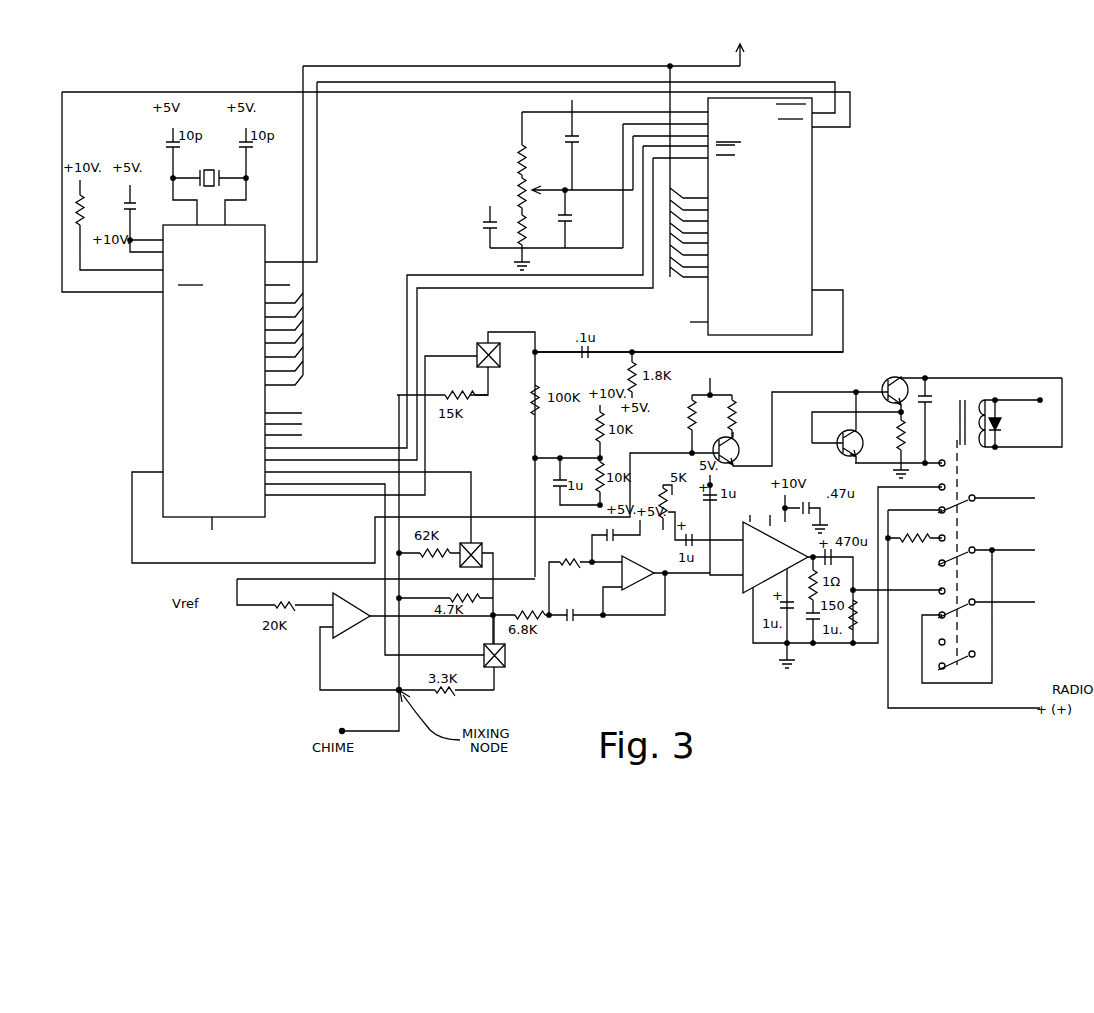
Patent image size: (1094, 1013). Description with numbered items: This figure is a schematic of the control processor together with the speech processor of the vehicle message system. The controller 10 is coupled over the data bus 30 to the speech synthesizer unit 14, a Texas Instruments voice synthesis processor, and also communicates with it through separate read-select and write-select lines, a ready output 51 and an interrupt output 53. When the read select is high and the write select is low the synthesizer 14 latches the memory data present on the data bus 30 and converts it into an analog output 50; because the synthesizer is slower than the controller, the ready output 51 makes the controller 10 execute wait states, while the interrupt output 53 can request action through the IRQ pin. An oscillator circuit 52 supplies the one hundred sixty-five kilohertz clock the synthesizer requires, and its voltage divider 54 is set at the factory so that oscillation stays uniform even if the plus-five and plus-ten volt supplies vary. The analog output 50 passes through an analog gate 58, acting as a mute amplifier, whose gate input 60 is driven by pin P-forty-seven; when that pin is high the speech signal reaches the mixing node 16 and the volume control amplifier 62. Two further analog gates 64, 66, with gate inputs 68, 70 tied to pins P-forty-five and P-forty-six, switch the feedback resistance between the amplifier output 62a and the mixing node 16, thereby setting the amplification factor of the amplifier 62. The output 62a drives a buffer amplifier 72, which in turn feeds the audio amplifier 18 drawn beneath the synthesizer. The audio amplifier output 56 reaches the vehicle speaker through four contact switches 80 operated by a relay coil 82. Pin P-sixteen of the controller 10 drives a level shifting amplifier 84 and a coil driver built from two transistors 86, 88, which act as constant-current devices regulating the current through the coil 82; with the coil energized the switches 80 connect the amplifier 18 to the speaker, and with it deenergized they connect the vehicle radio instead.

The controller 10 is at (175, 385).
The speech synthesizer unit 14 is at (800, 218).
The mixing node 16 is at (399, 690).
The audio amplifier 18 is at (760, 560).
The data bus 30 is at (554, 64).
The analog output 50 is at (845, 322).
The ready output 51 is at (838, 106).
The oscillator circuit 52 is at (463, 176).
The interrupt output 53 is at (840, 130).
The voltage divider 54 is at (574, 190).
The output 56 is at (856, 578).
The analog gate 58 is at (478, 343).
The gate input 60 is at (455, 356).
The volume control amplifier 62 is at (333, 627).
The output 62a is at (376, 620).
The analog gate 64 is at (478, 543).
The analog gate 66 is at (505, 660).
The gate input 68 is at (474, 495).
The gate input 70 is at (437, 655).
The buffer amplifier 72 is at (650, 585).
The contact switches 80 is at (960, 498).
The relay coil 82 is at (975, 405).
The level shifting amplifier 84 is at (735, 440).
The transistor 86 is at (905, 378).
The transistor 88 is at (838, 452).